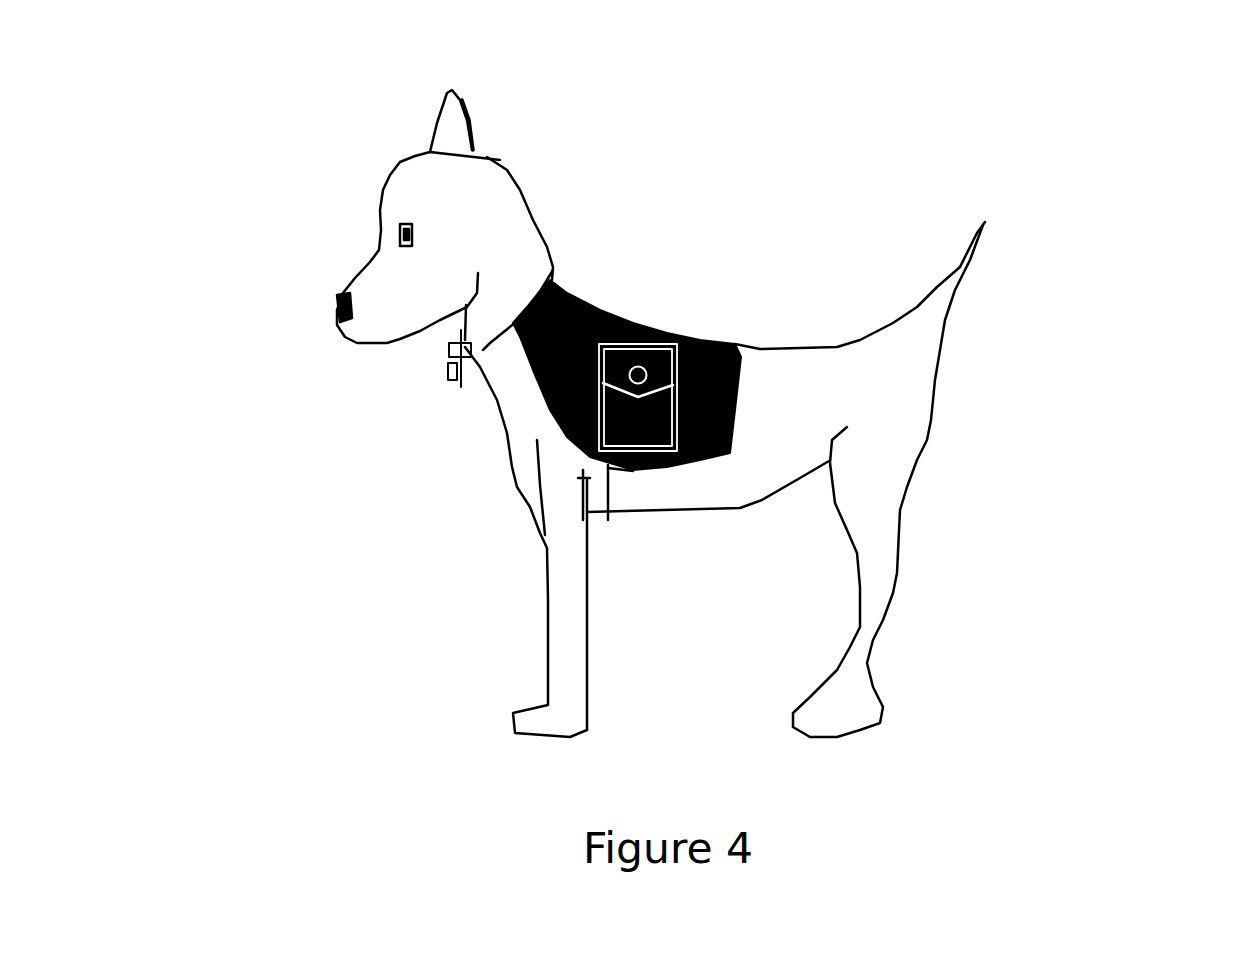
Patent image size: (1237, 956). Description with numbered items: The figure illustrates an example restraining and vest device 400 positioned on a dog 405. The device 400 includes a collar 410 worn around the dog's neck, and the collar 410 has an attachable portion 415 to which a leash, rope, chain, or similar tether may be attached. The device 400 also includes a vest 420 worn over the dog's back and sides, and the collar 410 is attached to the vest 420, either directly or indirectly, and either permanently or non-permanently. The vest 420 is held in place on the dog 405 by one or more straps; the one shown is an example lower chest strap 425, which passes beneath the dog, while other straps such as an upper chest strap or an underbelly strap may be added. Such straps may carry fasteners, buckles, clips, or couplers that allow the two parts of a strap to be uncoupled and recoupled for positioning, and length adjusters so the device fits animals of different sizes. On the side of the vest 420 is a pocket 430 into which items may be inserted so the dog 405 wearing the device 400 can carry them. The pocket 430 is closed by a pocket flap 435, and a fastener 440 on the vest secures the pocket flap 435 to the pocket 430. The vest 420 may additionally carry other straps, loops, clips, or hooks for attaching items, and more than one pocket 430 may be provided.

The restraining and vest device 400 is at (830, 107).
The dog 405 is at (903, 337).
The collar 410 is at (490, 337).
The attachable portion 415 is at (450, 387).
The vest 420 is at (723, 357).
The lower chest strap 425 is at (607, 517).
The pocket 430 is at (643, 425).
The pocket flap 435 is at (620, 360).
The fastener 440 is at (643, 367).